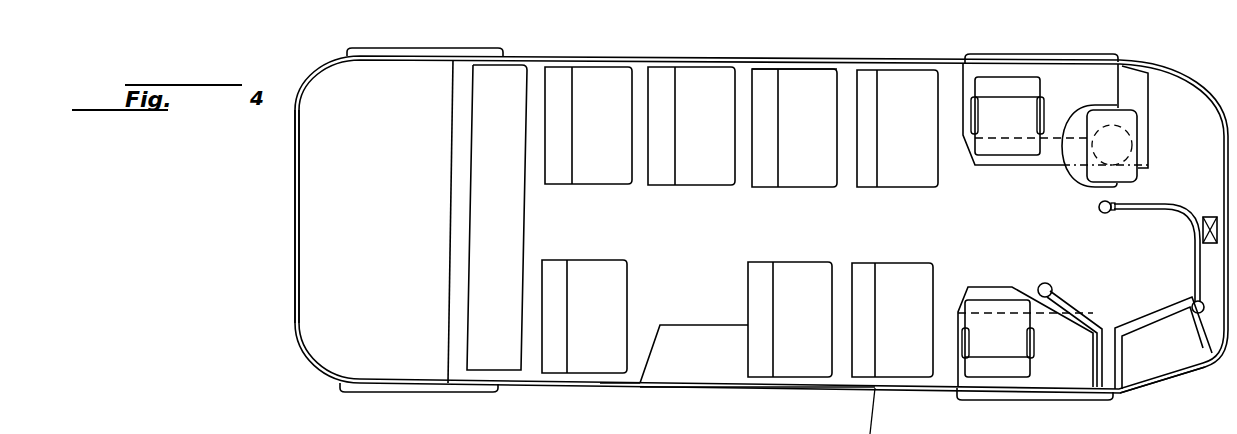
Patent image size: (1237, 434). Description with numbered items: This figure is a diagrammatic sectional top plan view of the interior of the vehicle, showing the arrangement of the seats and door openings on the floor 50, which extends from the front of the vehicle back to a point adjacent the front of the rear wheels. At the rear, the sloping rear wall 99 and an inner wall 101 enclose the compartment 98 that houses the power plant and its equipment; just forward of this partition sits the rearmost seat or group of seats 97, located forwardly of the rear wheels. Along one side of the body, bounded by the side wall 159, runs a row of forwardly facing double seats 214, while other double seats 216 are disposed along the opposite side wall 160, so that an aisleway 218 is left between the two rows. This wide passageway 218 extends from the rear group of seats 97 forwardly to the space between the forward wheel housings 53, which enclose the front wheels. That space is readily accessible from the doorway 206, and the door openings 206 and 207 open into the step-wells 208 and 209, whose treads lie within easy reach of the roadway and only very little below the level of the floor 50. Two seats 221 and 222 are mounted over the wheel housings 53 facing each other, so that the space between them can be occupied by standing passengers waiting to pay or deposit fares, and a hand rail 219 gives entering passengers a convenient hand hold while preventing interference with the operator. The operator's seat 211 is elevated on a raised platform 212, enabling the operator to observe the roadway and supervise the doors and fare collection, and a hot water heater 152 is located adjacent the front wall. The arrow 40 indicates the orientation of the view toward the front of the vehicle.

The floor 50 is at (708, 234).
The rear wall 99 is at (292, 272).
The compartment 98 is at (418, 257).
The inner wall 101 is at (447, 331).
The rearmost seat or group of seats 97 is at (512, 218).
The double seats 214 is at (690, 175).
The double seats 216 is at (923, 282).
The side wall 159 is at (812, 62).
The step-well 209 is at (702, 340).
The wheel housings 53 is at (1005, 138).
The seat 221 is at (1027, 146).
The raised platform 212 is at (1140, 147).
The operator's seat 211 is at (1127, 120).
The hot water heater 152 is at (1203, 233).
The hand rail 219 is at (1175, 213).
The step-well 208 is at (1153, 327).
The door opening 206 is at (1175, 372).
The seat 222 is at (1010, 307).
The aisleway 218 is at (927, 218).
The door opening 207 is at (712, 388).
The side wall 160 is at (783, 388).
The vehicle 40 is at (613, 392).